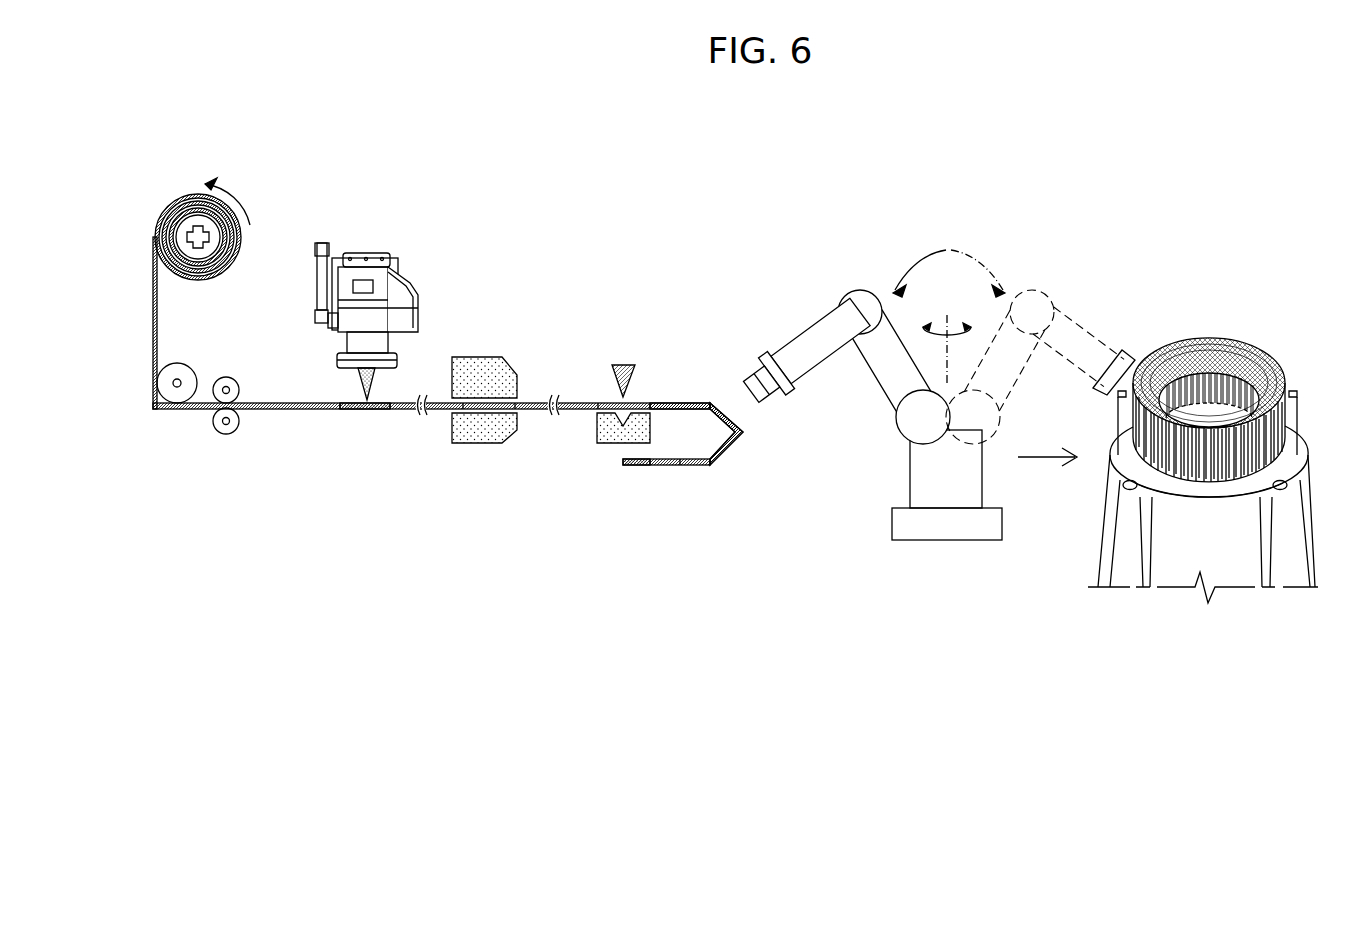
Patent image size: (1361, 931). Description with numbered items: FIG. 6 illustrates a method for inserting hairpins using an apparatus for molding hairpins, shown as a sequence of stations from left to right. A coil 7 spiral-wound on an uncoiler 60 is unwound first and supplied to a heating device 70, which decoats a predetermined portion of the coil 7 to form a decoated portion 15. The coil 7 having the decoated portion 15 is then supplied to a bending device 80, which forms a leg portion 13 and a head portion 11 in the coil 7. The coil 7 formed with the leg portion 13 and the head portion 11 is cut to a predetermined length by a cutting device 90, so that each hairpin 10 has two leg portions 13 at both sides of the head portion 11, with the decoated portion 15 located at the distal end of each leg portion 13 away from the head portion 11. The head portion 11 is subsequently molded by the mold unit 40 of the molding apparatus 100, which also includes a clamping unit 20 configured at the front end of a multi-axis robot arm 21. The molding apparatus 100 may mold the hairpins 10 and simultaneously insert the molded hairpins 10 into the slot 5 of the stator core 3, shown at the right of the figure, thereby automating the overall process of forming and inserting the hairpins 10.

The uncoiler 60 is at (208, 250).
The coil 7 is at (157, 320).
The decoated portion 15 is at (375, 410).
The heating device 70 is at (412, 285).
The bending device 80 is at (482, 370).
The cutting device 90 is at (623, 360).
The leg portion 13 is at (683, 402).
The head portion 11 is at (732, 445).
The hairpin 10 is at (707, 468).
The mold unit 40 is at (750, 368).
The clamping unit 20 is at (763, 352).
The multi-axis robot arm 21 is at (810, 342).
The apparatus for molding hairpins 100 is at (915, 381).
The slot 5 is at (1208, 483).
The stator core 3 is at (1237, 560).